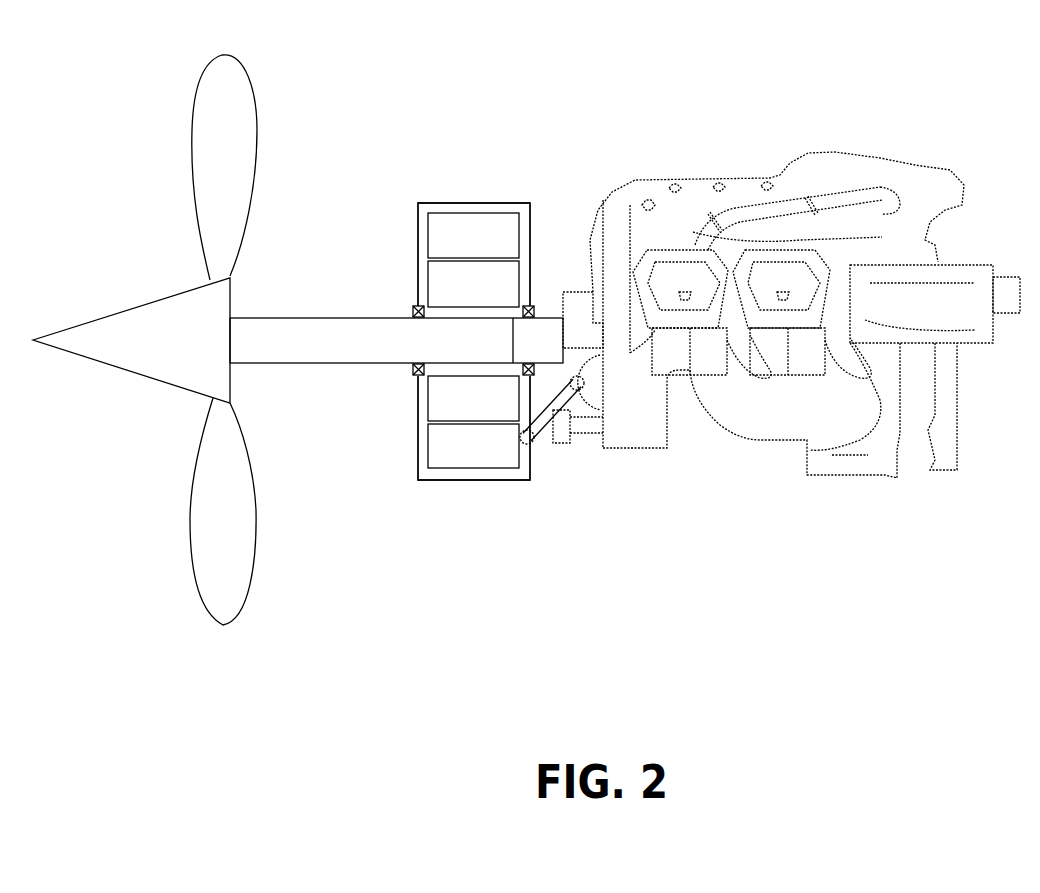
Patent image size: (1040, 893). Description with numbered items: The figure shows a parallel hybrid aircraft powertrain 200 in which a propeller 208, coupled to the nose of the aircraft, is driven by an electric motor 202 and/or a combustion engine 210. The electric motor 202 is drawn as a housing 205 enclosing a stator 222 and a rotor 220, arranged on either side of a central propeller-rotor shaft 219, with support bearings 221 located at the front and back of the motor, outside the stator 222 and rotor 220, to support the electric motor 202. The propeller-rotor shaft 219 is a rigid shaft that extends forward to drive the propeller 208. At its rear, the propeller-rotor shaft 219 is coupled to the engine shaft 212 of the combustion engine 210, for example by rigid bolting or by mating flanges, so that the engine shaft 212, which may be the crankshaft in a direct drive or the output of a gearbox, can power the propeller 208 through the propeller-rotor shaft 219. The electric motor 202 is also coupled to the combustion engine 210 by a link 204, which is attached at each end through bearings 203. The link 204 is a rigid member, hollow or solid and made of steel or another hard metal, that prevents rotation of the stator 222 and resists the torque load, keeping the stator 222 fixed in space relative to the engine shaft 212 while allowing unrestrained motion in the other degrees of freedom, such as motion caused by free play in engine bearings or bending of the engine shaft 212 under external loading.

The parallel hybrid aircraft powertrain 200 is at (600, 62).
The electric motor 202 is at (472, 156).
The bearings 203 is at (521, 442).
The link 204 is at (551, 426).
The housing 205 is at (416, 239).
The propeller 208 is at (208, 103).
The combustion engine 210 is at (780, 173).
The engine shaft 212 is at (541, 331).
The propeller-rotor shaft 219 is at (310, 350).
The rotor 220 is at (473, 341).
The support bearings 221 is at (522, 311).
The stator 222 is at (473, 340).